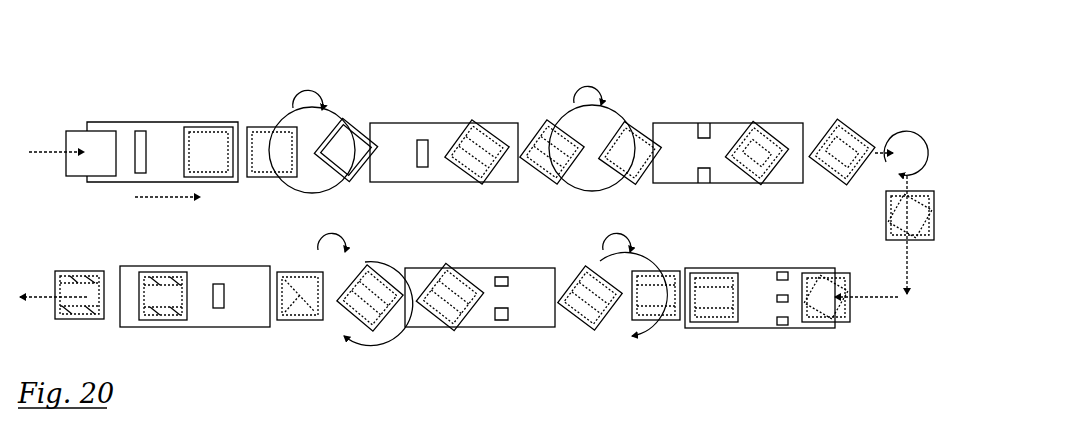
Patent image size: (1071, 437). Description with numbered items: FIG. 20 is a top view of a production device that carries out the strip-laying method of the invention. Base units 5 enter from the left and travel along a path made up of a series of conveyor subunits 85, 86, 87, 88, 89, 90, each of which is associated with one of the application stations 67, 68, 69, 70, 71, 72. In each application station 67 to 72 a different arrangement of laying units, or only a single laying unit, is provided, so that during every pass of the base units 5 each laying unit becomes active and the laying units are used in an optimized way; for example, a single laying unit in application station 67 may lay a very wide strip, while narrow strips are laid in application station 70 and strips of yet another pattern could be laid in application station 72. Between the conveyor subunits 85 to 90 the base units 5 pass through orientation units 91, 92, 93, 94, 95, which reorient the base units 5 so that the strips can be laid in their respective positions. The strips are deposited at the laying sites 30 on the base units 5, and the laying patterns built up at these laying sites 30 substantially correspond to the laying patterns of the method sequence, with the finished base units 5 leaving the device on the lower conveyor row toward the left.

The base unit 5 is at (80, 138).
The laying sites 30 is at (150, 145).
The application station 67 is at (143, 124).
The application station 68 is at (423, 130).
The application station 69 is at (705, 112).
The application station 70 is at (783, 265).
The application station 71 is at (505, 262).
The application station 72 is at (221, 257).
The conveyor subunit 85 is at (175, 140).
The conveyor subunit 86 is at (440, 132).
The conveyor subunit 87 is at (735, 135).
The conveyor subunit 88 is at (762, 274).
The conveyor subunit 89 is at (482, 276).
The conveyor subunit 90 is at (248, 272).
The orientation unit 91 is at (339, 84).
The orientation unit 92 is at (614, 82).
The orientation unit 93 is at (897, 124).
The orientation unit 94 is at (624, 355).
The orientation unit 95 is at (334, 356).